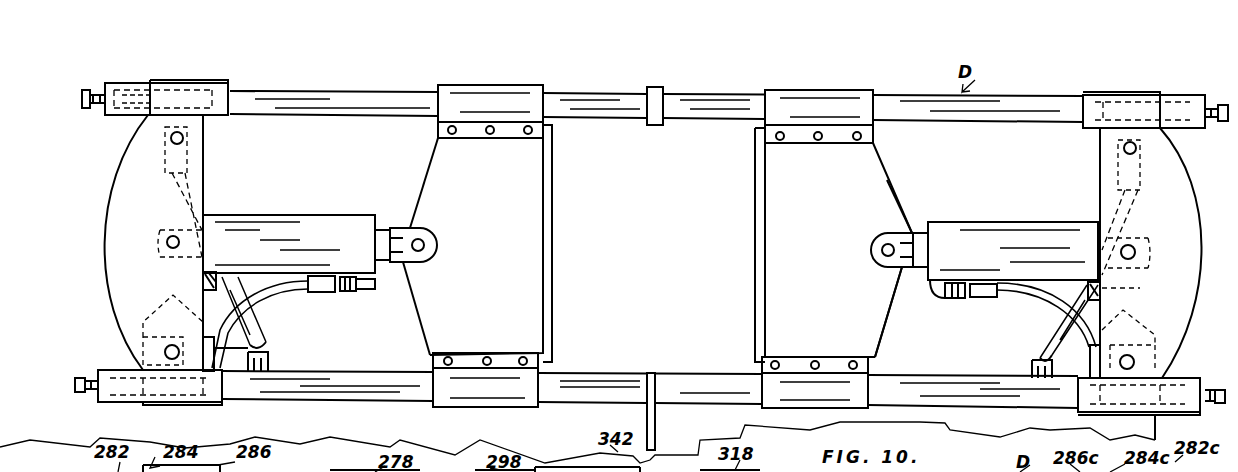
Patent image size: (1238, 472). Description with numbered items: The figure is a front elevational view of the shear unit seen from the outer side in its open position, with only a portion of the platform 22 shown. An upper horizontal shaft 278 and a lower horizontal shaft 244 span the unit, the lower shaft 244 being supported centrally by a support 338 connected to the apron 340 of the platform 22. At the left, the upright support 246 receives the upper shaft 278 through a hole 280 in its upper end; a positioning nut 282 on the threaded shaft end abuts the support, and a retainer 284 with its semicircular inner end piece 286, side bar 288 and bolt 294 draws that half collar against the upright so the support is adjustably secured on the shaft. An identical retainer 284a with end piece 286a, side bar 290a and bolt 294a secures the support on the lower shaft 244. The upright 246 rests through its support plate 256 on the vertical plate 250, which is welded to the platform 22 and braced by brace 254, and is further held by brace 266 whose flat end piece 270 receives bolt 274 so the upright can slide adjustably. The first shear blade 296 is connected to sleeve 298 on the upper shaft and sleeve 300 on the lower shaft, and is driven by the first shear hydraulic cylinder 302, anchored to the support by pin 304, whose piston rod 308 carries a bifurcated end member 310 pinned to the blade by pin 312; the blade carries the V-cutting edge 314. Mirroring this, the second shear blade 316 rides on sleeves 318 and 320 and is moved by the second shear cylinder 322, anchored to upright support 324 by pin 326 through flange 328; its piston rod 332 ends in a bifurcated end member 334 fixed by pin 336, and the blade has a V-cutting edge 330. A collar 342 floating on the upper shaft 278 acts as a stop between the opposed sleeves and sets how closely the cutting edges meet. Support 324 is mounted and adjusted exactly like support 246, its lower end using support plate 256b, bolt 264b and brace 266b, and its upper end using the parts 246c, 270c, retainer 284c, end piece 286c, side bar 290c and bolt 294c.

The platform 22 is at (340, 371).
The lower horizontal shaft 244 is at (350, 400).
The upright support 246 is at (108, 250).
The vertical plate 250 is at (268, 350).
The brace 254 is at (125, 345).
The support plate 256 is at (160, 305).
The brace 266 is at (208, 178).
The flat end piece 270 is at (206, 130).
The bolt 274 is at (184, 140).
The upper horizontal shaft 278 is at (352, 92).
The hole 280 is at (235, 55).
The positioning nut 282 is at (123, 85).
The retainer 284 is at (189, 81).
The semicircular inner end piece 286 is at (220, 80).
The side bar 288 is at (175, 105).
The side bar 290a is at (130, 400).
The side bar 290c is at (1128, 100).
The bolt 294 is at (82, 98).
The bolt 294a is at (80, 378).
The bolt 294c is at (1215, 122).
The retainer 284a is at (176, 413).
The semicircular inner end piece 286a is at (225, 405).
The retainer 284c is at (1166, 88).
The semicircular inner end piece 286c is at (1095, 92).
The first shear blade 296 is at (486, 246).
The sleeve 298 is at (496, 100).
The sleeve 300 is at (480, 392).
The first shear hydraulic cylinder 302 is at (289, 291).
The pin 304 is at (168, 238).
The piston rod 308 is at (410, 206).
The bifurcated end member 310 is at (435, 240).
The pin 312 is at (425, 268).
The V-cutting edge 314 is at (545, 298).
The second shear blade 316 is at (838, 250).
The sleeve 318 is at (800, 98).
The sleeve 320 is at (793, 398).
The second shear cylinder 322 is at (1013, 284).
The upright support 324 is at (1160, 294).
The pin 326 is at (1136, 250).
The flange 328 is at (1125, 238).
The V-cutting edge 330 is at (757, 298).
The piston rod 332 is at (918, 232).
The bifurcated end member 334 is at (890, 272).
The pin 336 is at (882, 252).
The support 338 is at (656, 418).
The apron 340 is at (1160, 422).
The collar 342 is at (654, 125).
The upright support 246c is at (1181, 253).
The flat end piece 270c is at (1141, 185).
The support plate 256b is at (1128, 305).
The nut-equipped bolt 264b is at (1130, 362).
The brace 266b is at (1040, 340).